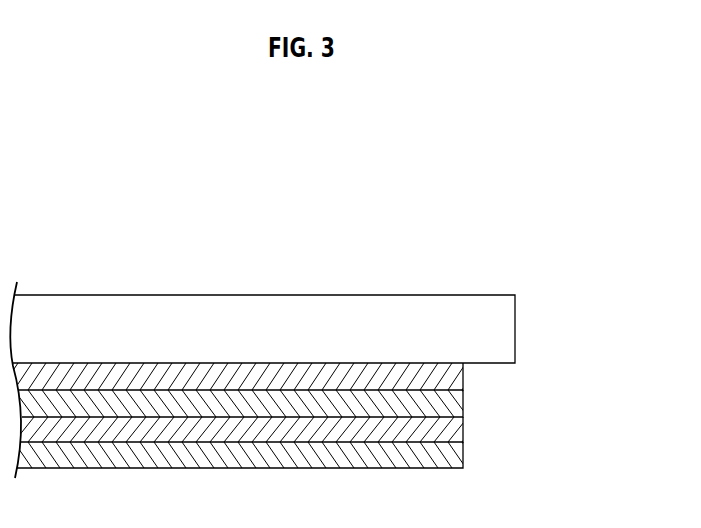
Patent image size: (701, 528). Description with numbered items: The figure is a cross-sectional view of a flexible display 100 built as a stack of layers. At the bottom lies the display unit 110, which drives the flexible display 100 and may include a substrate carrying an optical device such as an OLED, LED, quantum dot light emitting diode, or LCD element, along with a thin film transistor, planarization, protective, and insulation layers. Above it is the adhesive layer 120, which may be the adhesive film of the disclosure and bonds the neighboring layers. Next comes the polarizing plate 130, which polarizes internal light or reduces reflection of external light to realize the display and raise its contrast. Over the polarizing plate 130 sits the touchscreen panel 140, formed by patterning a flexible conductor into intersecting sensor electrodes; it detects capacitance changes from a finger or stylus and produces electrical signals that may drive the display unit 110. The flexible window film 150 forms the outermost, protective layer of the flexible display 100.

The flexible display 100 is at (478, 272).
The display unit 110 is at (450, 453).
The adhesive layer 120 is at (450, 427).
The polarizing plate 130 is at (450, 402).
The touchscreen panel 140 is at (450, 375).
The flexible window film 150 is at (500, 328).